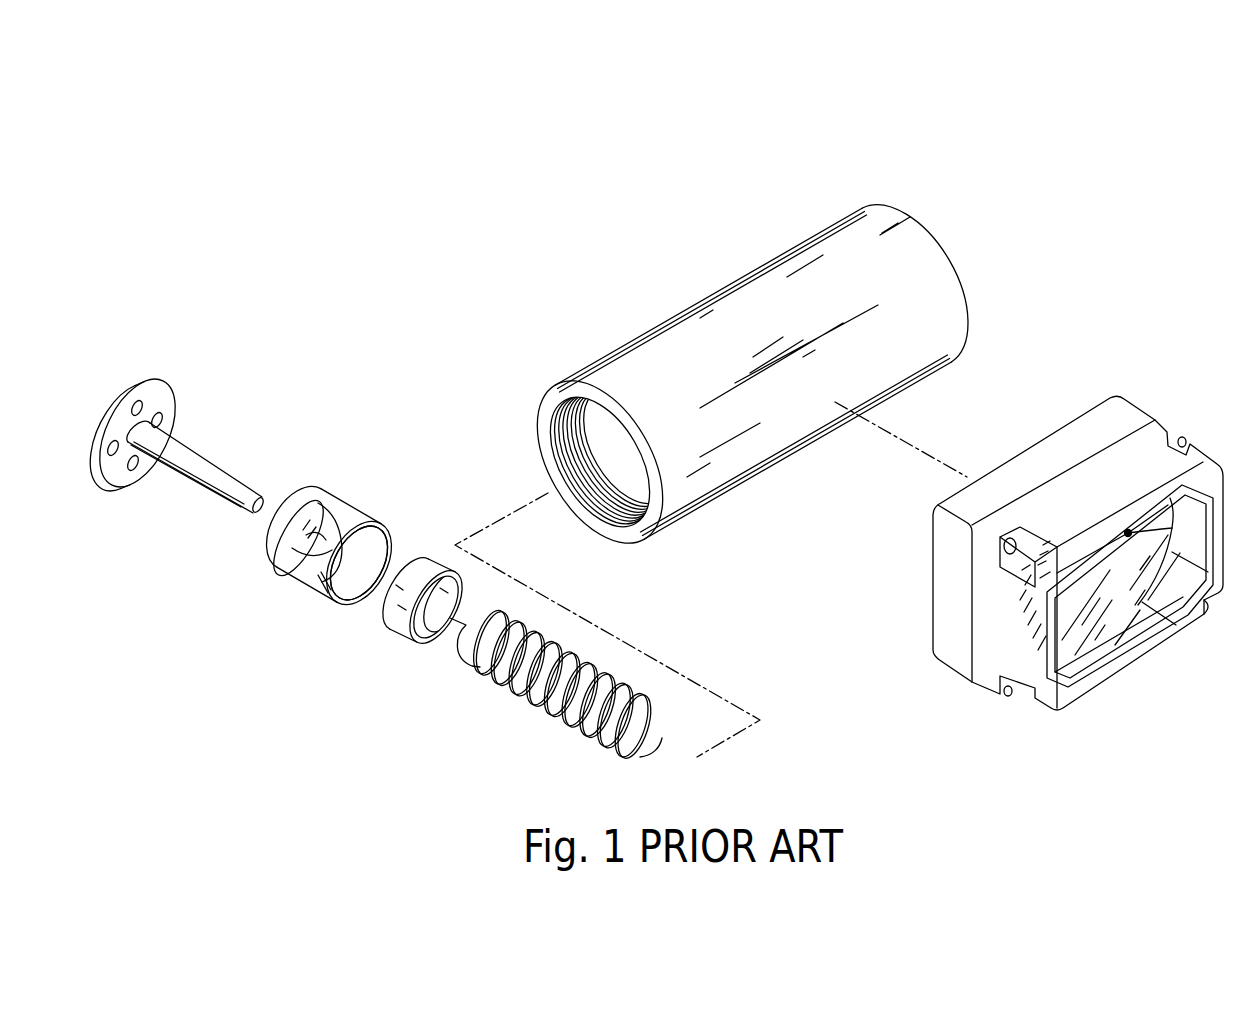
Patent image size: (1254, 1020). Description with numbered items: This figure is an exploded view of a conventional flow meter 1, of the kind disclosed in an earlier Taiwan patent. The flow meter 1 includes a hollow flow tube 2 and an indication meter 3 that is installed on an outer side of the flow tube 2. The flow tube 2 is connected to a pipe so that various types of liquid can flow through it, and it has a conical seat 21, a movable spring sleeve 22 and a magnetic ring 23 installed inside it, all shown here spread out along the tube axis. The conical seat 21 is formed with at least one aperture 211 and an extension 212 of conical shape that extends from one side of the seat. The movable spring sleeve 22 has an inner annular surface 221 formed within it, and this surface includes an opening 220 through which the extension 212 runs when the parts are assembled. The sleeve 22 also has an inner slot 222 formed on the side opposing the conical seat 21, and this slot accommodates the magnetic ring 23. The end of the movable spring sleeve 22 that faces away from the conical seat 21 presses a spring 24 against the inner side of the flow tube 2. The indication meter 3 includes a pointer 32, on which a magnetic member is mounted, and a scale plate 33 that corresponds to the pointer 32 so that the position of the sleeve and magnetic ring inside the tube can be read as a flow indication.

The flow meter 1 is at (1080, 178).
The flow tube 2 is at (647, 383).
The conical seat 21 is at (127, 468).
The aperture 211 is at (175, 433).
The extension 212 is at (193, 462).
The movable spring sleeve 22 is at (303, 583).
The inner annular surface 221 is at (280, 553).
The opening 220 is at (322, 606).
The inner slot 222 is at (360, 557).
The magnetic ring 23 is at (393, 623).
The spring 24 is at (523, 695).
The indication meter 3 is at (1087, 398).
The pointer 32 is at (1092, 557).
The scale plate 33 is at (1028, 610).